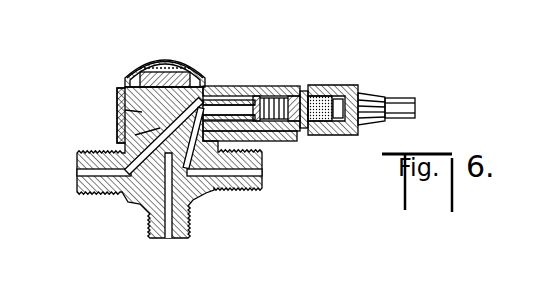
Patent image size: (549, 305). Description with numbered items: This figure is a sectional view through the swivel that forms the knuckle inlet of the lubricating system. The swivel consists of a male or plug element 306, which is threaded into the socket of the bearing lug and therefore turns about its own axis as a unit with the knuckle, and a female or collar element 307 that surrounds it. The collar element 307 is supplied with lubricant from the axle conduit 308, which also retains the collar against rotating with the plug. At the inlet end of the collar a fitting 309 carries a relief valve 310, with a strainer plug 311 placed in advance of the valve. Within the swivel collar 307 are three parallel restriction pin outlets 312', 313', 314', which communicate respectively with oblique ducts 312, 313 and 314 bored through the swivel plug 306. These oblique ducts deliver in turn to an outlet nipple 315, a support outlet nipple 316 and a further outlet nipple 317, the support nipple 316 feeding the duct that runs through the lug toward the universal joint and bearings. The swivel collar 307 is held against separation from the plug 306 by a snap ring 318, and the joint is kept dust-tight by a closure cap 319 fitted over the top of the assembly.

The plug element 306 is at (137, 200).
The collar element 307 is at (230, 86).
The axle conduit 308 is at (415, 103).
The fitting 309 is at (307, 86).
The relief valve 310 is at (326, 86).
The strainer plug 311 is at (338, 135).
The oblique duct 312 is at (138, 132).
The restriction pin outlet 312' is at (221, 73).
The oblique duct 313 is at (99, 115).
The restriction pin outlet 313' is at (280, 88).
The oblique duct 314 is at (218, 170).
The restriction pin outlet 314' is at (263, 149).
The outlet nipple 315 is at (90, 194).
The support outlet nipple 316 is at (150, 236).
The outlet nipple 317 is at (253, 188).
The snap ring 318 is at (128, 76).
The closure cap 319 is at (168, 44).